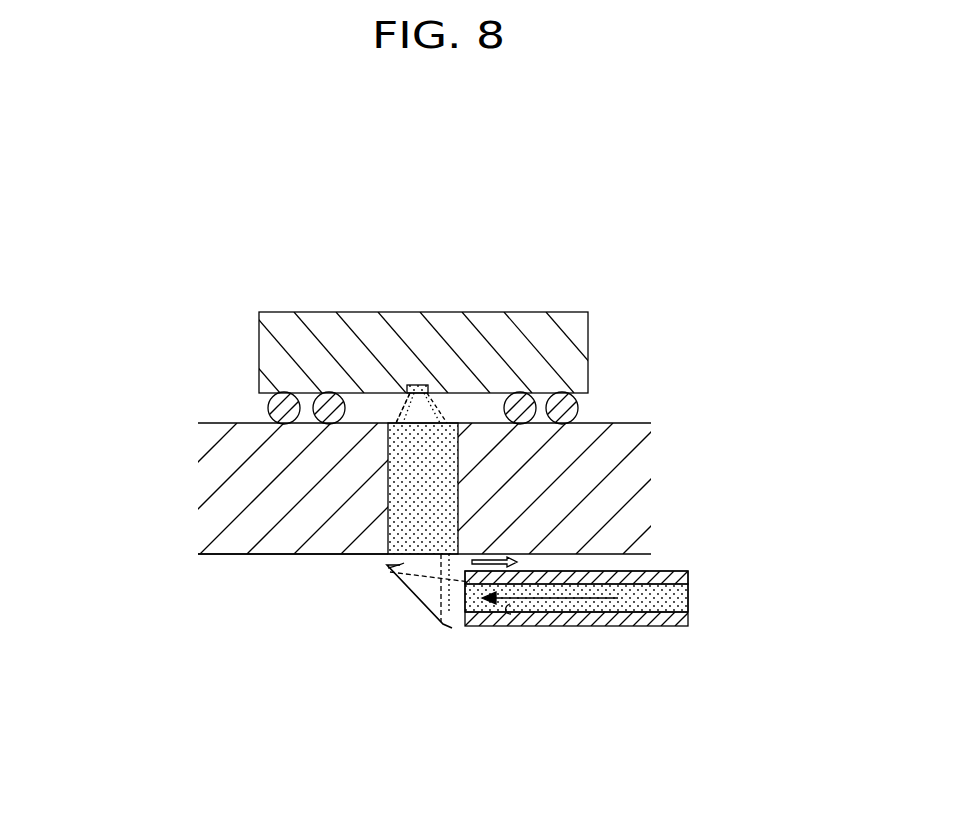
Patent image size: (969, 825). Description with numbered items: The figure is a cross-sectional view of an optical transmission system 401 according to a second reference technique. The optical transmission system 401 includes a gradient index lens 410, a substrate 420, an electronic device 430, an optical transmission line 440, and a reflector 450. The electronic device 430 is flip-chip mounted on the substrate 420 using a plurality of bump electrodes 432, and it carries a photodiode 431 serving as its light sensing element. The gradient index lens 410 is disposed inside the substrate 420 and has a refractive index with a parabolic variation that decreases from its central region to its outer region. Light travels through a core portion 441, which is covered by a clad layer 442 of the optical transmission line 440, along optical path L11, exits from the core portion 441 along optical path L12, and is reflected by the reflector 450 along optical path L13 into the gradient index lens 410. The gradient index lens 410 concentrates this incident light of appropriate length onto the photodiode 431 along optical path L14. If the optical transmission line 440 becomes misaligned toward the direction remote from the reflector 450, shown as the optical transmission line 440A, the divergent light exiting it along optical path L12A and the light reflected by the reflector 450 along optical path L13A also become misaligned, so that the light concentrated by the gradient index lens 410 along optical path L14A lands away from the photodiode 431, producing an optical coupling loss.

The optical transmission system 401 is at (144, 223).
The electronic device 430 is at (588, 330).
The photodiode 431 is at (423, 385).
The bump electrodes 432 is at (578, 410).
The gradient index lens 410 is at (402, 482).
The substrate 420 is at (222, 556).
The optical transmission line 440 is at (673, 571).
The core portion 441 is at (690, 596).
The clad layer 442 is at (690, 577).
The optical transmission line 440A is at (508, 608).
The reflector 450 is at (415, 592).
The optical path L11 is at (608, 600).
The optical path L12 is at (452, 620).
The optical path L12A is at (455, 620).
The optical path L13 is at (385, 568).
The optical path L13A is at (387, 565).
The optical path L14 is at (405, 400).
The optical path L14A is at (393, 415).